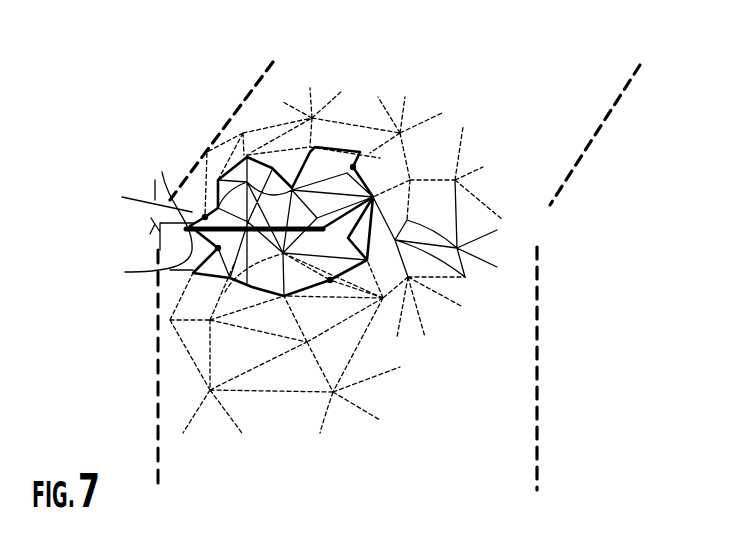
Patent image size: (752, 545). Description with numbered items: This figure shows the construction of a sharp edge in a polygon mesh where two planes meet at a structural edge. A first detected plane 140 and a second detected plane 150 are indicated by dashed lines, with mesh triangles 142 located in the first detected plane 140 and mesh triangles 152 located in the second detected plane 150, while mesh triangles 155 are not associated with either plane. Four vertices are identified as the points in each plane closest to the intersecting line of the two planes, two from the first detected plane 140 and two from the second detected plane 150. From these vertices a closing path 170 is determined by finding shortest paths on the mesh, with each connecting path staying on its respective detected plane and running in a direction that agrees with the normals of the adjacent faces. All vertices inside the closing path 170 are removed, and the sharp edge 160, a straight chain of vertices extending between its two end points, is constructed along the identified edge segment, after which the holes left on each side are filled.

The first detected plane 140 is at (582, 155).
The mesh triangles 142 is at (257, 132).
The second detected plane 150 is at (537, 367).
The mesh triangles 152 is at (203, 420).
The mesh triangles 155 is at (138, 200).
The sharp edge 160 is at (140, 229).
The closing path 170 is at (360, 152).